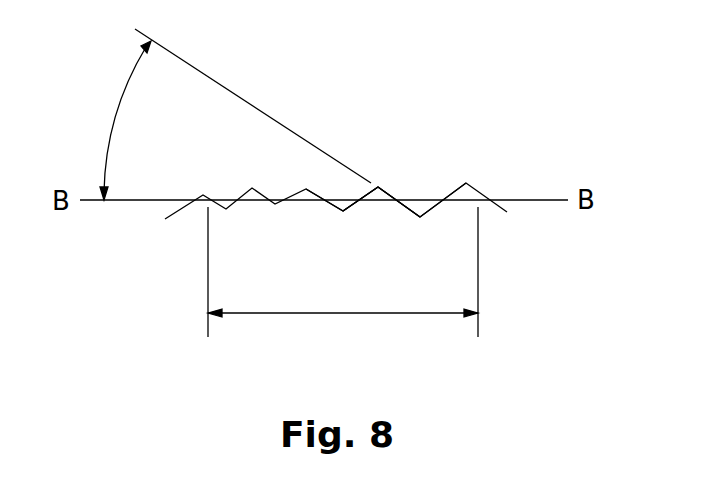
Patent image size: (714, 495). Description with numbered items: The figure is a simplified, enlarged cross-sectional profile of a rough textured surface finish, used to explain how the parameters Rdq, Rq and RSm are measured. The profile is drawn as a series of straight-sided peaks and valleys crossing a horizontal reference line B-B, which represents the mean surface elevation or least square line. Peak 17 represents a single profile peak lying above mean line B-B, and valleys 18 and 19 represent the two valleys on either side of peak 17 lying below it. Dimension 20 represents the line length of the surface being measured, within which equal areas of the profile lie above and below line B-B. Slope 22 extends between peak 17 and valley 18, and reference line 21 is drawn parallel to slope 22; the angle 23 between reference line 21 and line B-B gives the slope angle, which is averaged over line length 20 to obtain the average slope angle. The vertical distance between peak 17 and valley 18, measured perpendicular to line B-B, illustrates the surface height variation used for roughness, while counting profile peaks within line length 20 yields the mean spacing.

The peak 17 is at (377, 187).
The valley 18 is at (420, 217).
The valley 19 is at (343, 211).
The dimension 20 is at (350, 313).
The reference line 21 is at (227, 87).
The slope 22 is at (392, 197).
The angle 23 is at (118, 108).